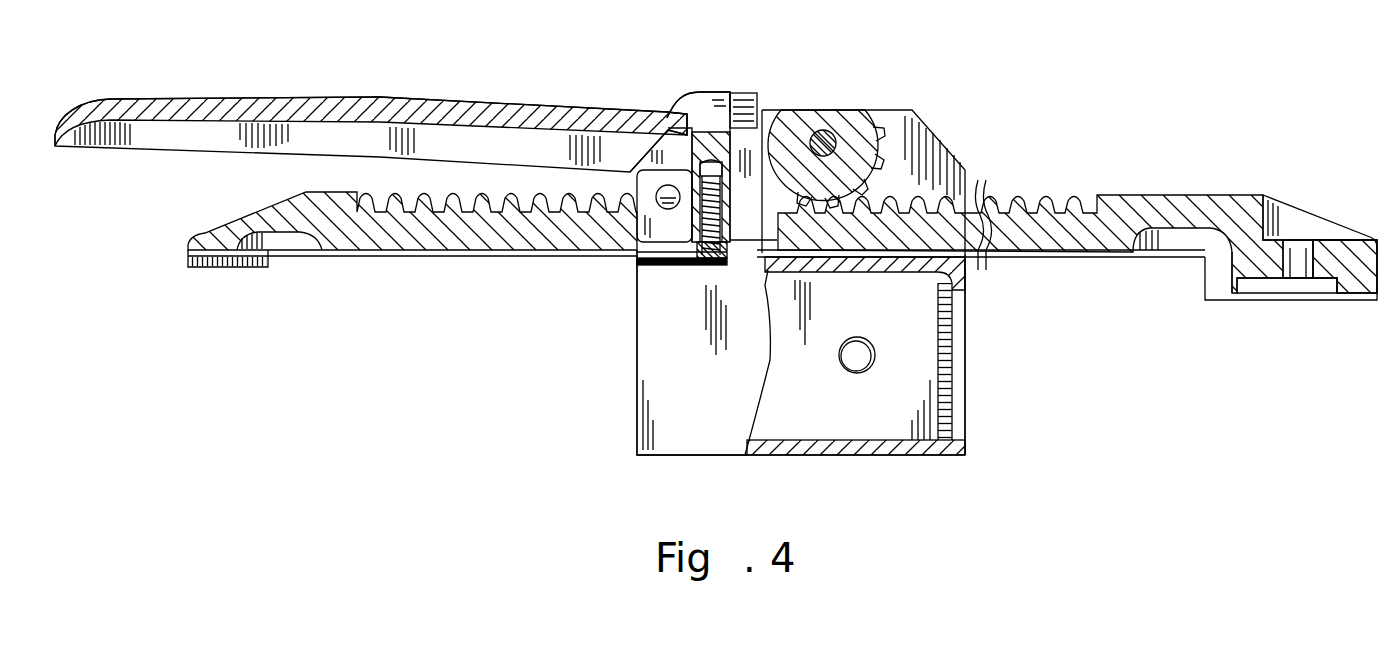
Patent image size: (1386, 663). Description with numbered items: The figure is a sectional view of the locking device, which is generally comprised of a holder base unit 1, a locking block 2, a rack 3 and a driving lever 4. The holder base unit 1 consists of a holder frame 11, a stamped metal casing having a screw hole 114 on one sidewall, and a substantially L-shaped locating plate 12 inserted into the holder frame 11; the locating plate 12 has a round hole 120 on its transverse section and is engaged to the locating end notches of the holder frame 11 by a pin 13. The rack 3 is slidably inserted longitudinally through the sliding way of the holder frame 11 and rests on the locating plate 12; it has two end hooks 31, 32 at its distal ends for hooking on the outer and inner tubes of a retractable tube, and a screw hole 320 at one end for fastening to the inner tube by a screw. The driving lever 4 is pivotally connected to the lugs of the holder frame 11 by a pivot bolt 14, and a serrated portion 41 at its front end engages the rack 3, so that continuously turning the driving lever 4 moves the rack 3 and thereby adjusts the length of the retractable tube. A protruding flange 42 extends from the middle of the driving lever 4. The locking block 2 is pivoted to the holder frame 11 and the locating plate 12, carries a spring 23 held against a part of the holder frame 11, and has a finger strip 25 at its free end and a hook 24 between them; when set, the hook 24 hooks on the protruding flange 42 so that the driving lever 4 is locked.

The holder base unit 1 is at (978, 402).
The locking block 2 is at (712, 84).
The rack 3 is at (1063, 195).
The driving lever 4 is at (372, 97).
The holder frame 11 is at (655, 383).
The locating plate 12 is at (870, 266).
The pin 13 is at (657, 207).
The pivot bolt 14 is at (830, 138).
The spring 23 is at (703, 240).
The hook 24 is at (690, 110).
The finger strip 25 is at (745, 100).
The end hook 31 is at (222, 262).
The end hook 32 is at (1355, 275).
The serrated portion 41 is at (878, 138).
The protruding flange 42 is at (665, 128).
The screw hole 114 is at (850, 365).
The round hole 120 is at (947, 353).
The screw hole 320 is at (1302, 252).